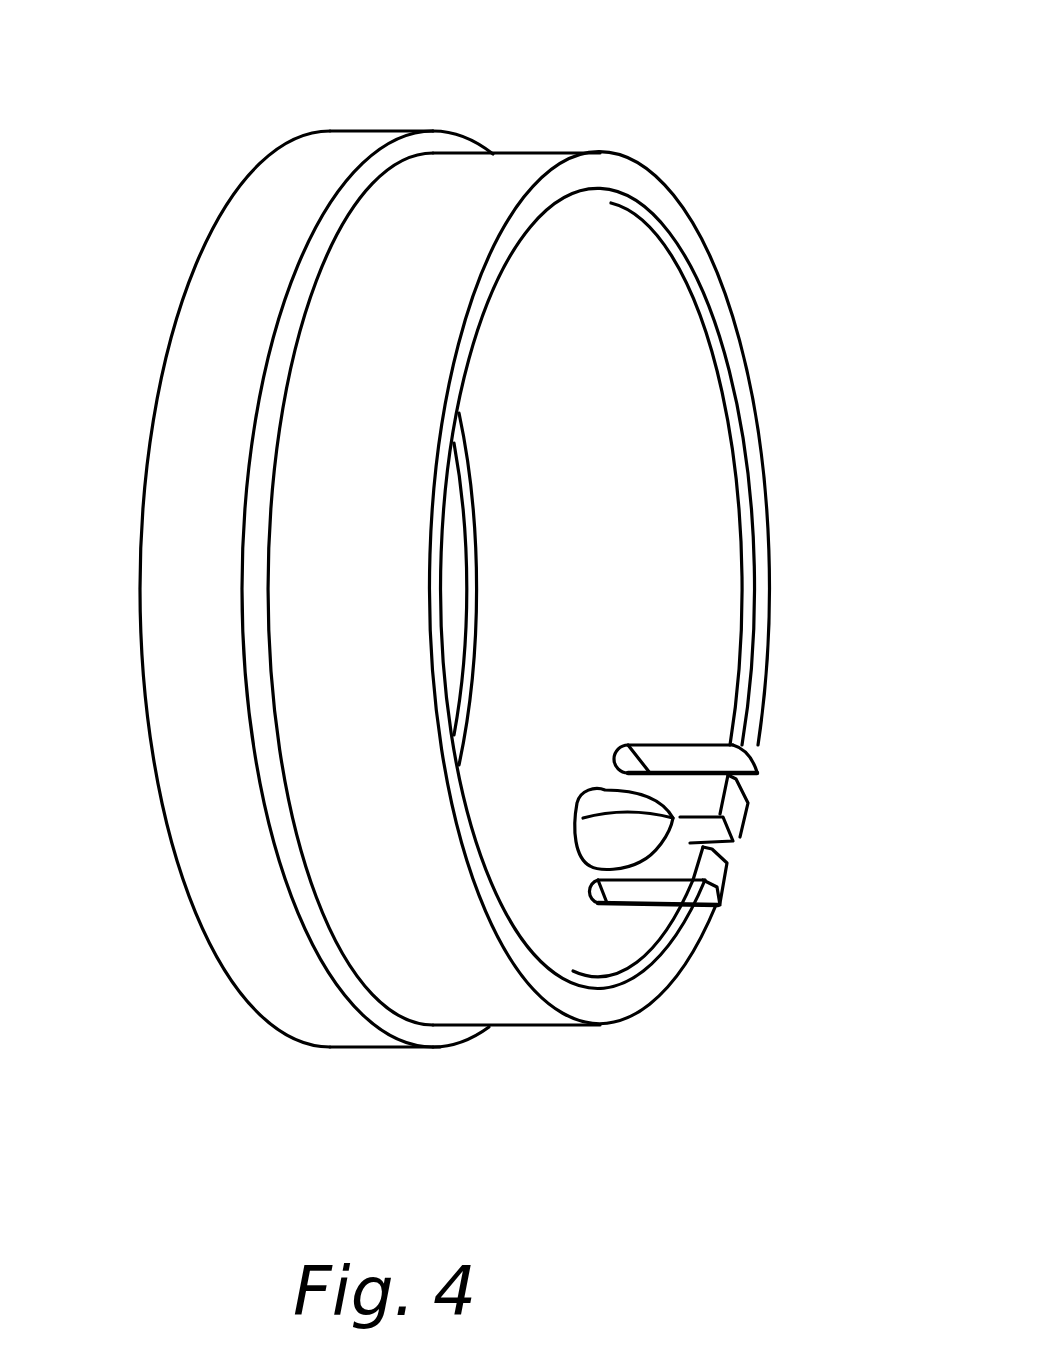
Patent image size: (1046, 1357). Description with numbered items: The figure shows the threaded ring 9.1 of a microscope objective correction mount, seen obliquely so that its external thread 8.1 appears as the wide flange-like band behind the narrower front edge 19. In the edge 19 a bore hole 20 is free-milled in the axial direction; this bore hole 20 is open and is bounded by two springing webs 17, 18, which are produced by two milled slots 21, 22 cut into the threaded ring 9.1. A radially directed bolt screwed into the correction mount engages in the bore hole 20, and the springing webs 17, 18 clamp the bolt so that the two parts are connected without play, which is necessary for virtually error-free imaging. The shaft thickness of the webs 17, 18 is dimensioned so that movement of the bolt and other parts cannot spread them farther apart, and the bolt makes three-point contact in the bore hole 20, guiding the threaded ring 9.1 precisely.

The external thread 8.1 is at (326, 152).
The threaded ring 9.1 is at (478, 187).
The edge 19 is at (764, 592).
The milled slot 22 is at (682, 762).
The springing web 17 is at (698, 789).
The springing web 18 is at (672, 850).
The milled slot 21 is at (642, 890).
The bore hole 20 is at (618, 829).